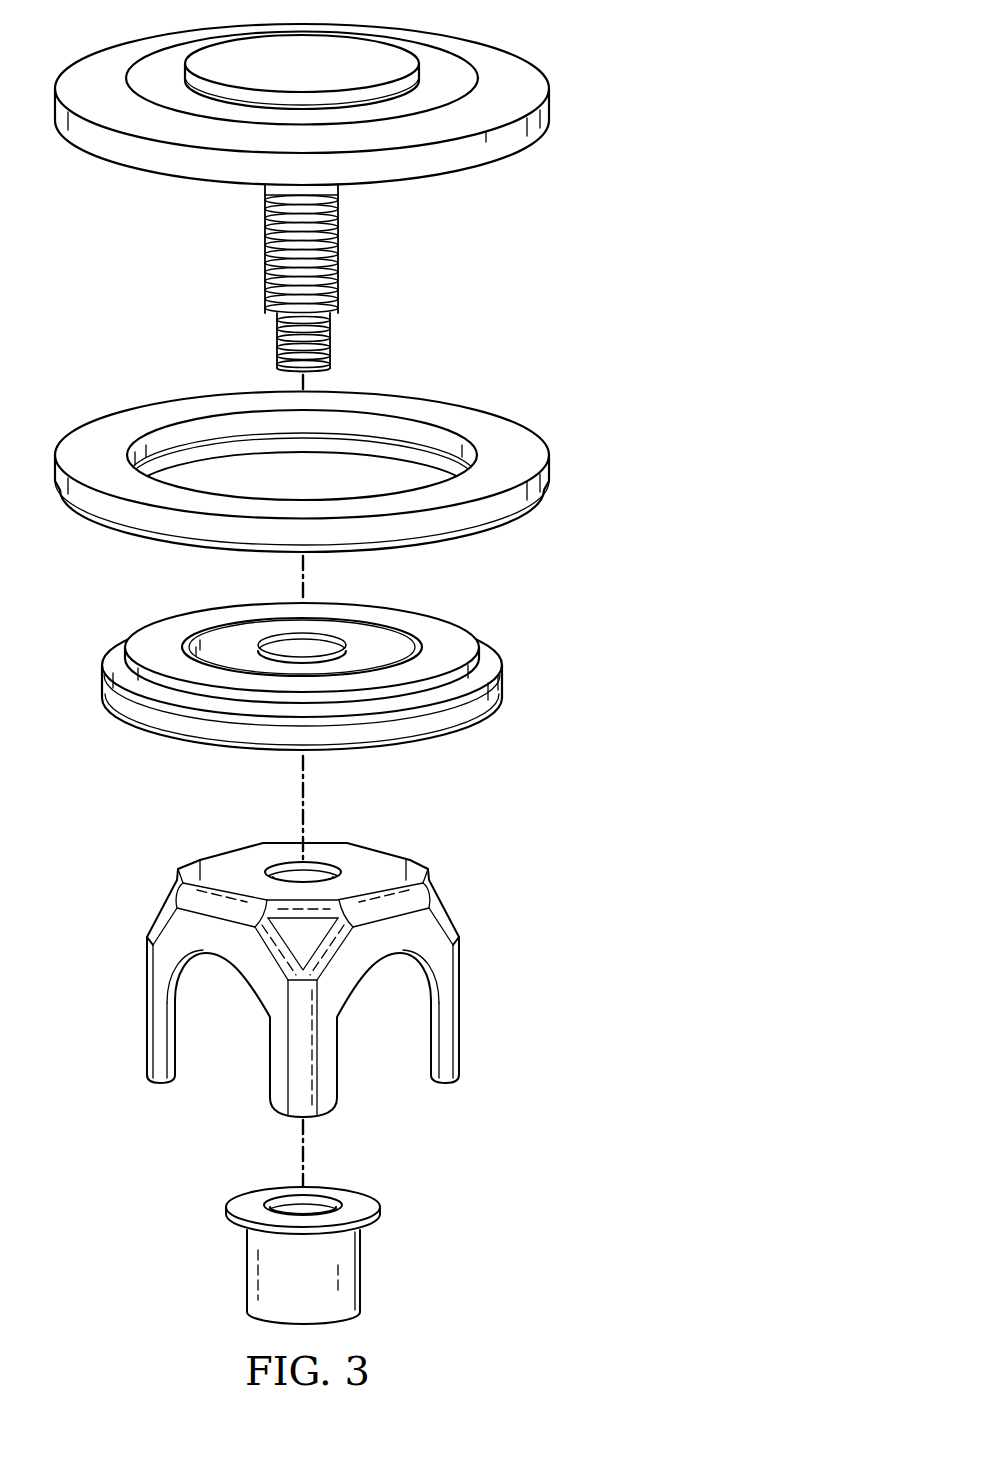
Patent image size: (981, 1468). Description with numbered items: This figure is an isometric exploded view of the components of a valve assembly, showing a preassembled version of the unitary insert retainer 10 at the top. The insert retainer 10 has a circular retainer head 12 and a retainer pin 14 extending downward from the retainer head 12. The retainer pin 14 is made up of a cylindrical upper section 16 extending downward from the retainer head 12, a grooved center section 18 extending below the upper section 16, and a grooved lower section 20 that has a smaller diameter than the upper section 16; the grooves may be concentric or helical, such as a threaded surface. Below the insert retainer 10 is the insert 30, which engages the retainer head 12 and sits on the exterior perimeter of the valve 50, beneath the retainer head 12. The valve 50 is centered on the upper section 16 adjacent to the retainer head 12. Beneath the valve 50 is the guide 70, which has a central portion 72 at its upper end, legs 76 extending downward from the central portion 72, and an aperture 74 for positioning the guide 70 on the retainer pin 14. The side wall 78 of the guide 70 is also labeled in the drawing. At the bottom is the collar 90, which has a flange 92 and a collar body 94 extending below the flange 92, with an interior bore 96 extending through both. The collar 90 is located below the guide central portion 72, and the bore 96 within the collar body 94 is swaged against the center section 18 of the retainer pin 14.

The insert retainer 10 is at (378, 670).
The retainer head 12 is at (551, 100).
The retainer pin 14 is at (309, 278).
The upper section 16 is at (266, 188).
The center section 18 is at (268, 268).
The lower section 20 is at (278, 345).
The insert 30 is at (573, 458).
The valve 50 is at (538, 657).
The guide 70 is at (374, 956).
The central portion 72 is at (230, 865).
The aperture 74 is at (338, 868).
The legs 76 is at (463, 1010).
The side wall 78 is at (438, 895).
The collar 90 is at (325, 1230).
The flange 92 is at (228, 1210).
The collar body 94 is at (247, 1270).
The interior bore 96 is at (331, 1203).